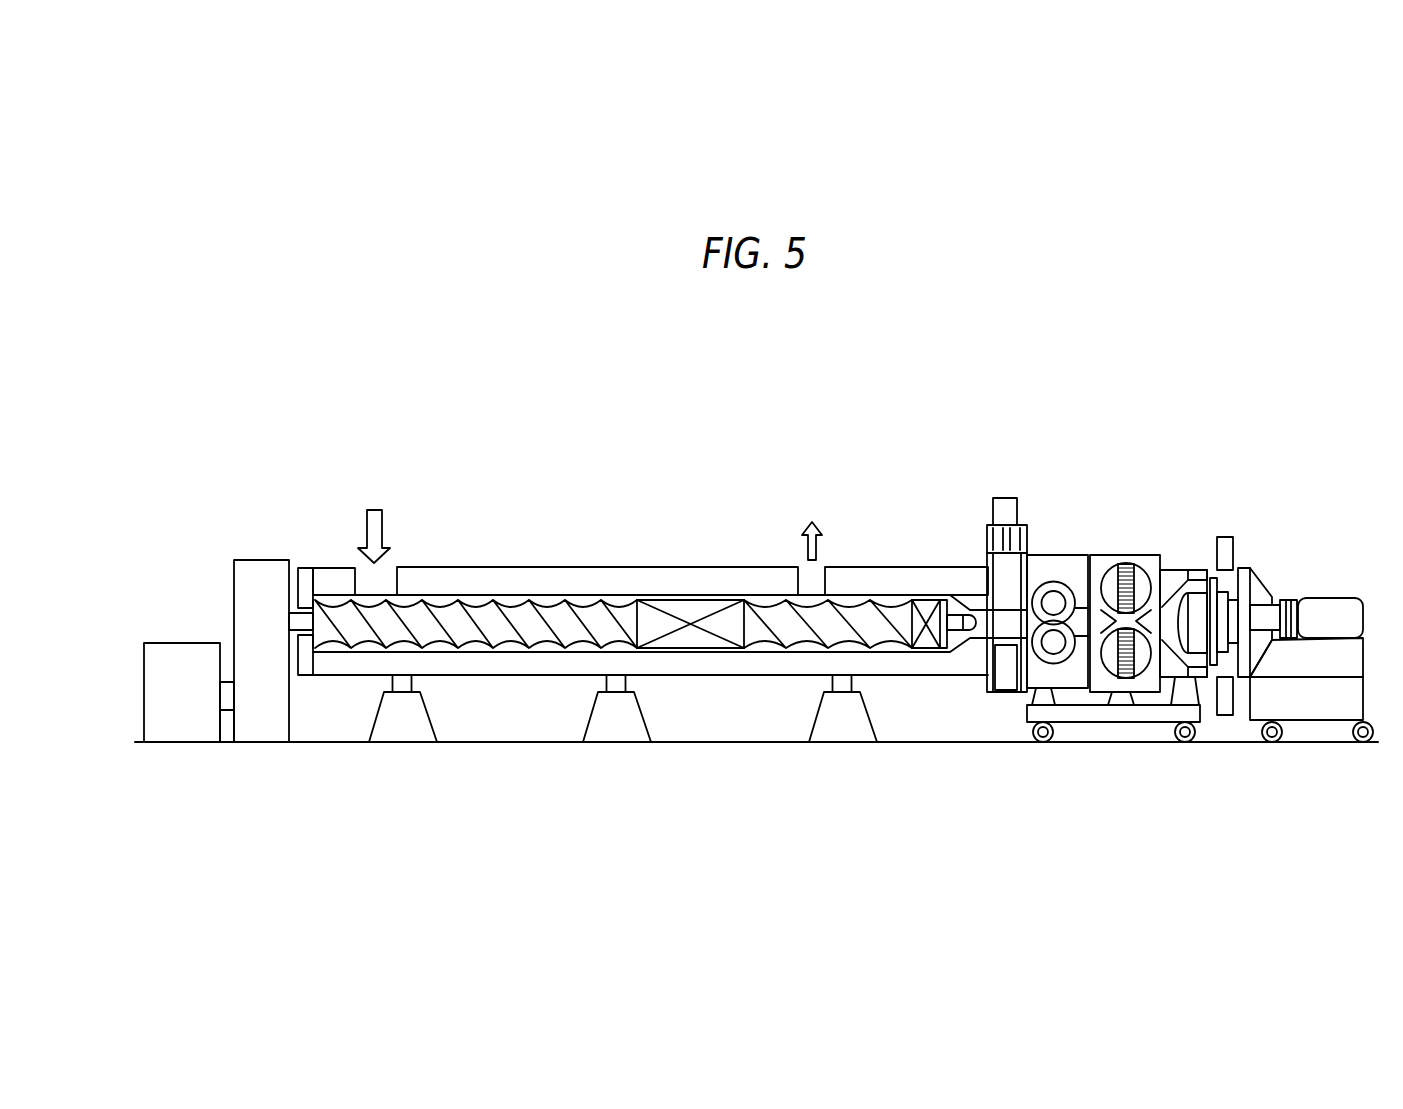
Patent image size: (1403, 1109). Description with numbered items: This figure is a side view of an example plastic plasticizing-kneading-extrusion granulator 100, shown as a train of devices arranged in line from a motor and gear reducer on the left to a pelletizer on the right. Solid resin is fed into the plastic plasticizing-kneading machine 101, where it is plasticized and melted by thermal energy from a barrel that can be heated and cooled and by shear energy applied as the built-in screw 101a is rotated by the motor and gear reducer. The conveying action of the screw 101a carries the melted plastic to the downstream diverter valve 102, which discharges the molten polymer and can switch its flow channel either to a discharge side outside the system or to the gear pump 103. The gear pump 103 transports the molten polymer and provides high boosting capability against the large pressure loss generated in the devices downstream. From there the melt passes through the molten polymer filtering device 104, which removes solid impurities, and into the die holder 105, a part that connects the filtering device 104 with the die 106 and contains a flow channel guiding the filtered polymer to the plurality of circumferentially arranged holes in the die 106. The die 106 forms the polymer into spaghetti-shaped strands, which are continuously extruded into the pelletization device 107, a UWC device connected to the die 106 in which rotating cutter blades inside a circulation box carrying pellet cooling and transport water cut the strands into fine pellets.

The plastic plasticizing-kneading-extrusion granulator 100 is at (1210, 408).
The plastic plasticizing-kneading machine 101 is at (985, 467).
The screw 101a is at (489, 600).
The diverter valve 102 is at (1005, 497).
The gear pump 103 is at (1053, 555).
The molten polymer filtering device 104 is at (1127, 555).
The die holder 105 is at (1171, 570).
The die 106 is at (1207, 568).
The pelletization device (UWC device) 107 is at (1358, 520).